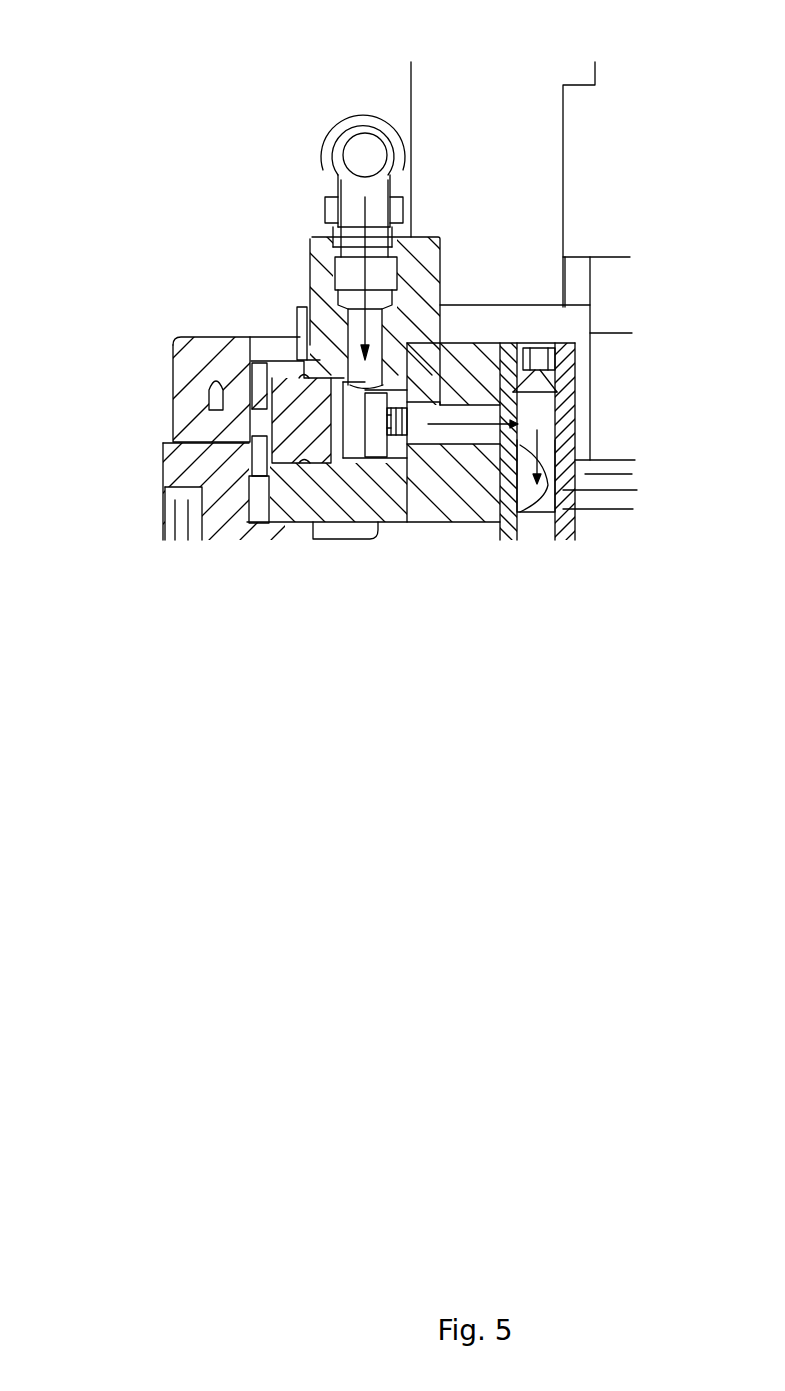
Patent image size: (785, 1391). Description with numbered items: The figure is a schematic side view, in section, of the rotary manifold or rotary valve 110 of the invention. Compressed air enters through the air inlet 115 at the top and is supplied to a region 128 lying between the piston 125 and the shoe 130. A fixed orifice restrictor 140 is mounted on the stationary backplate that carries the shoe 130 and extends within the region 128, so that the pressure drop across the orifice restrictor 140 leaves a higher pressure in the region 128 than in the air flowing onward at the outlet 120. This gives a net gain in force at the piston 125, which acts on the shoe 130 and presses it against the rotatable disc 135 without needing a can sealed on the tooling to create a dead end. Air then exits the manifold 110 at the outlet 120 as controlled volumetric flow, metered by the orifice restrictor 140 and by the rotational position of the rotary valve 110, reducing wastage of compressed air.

The rotary valve 110 is at (120, 565).
The air inlet 115 is at (347, 112).
The outlet 120 is at (590, 478).
The piston 125 is at (270, 388).
The region 128 is at (345, 447).
The shoe 130 is at (461, 343).
The rotatable disc 135 is at (565, 343).
The orifice restrictor 140 is at (380, 457).